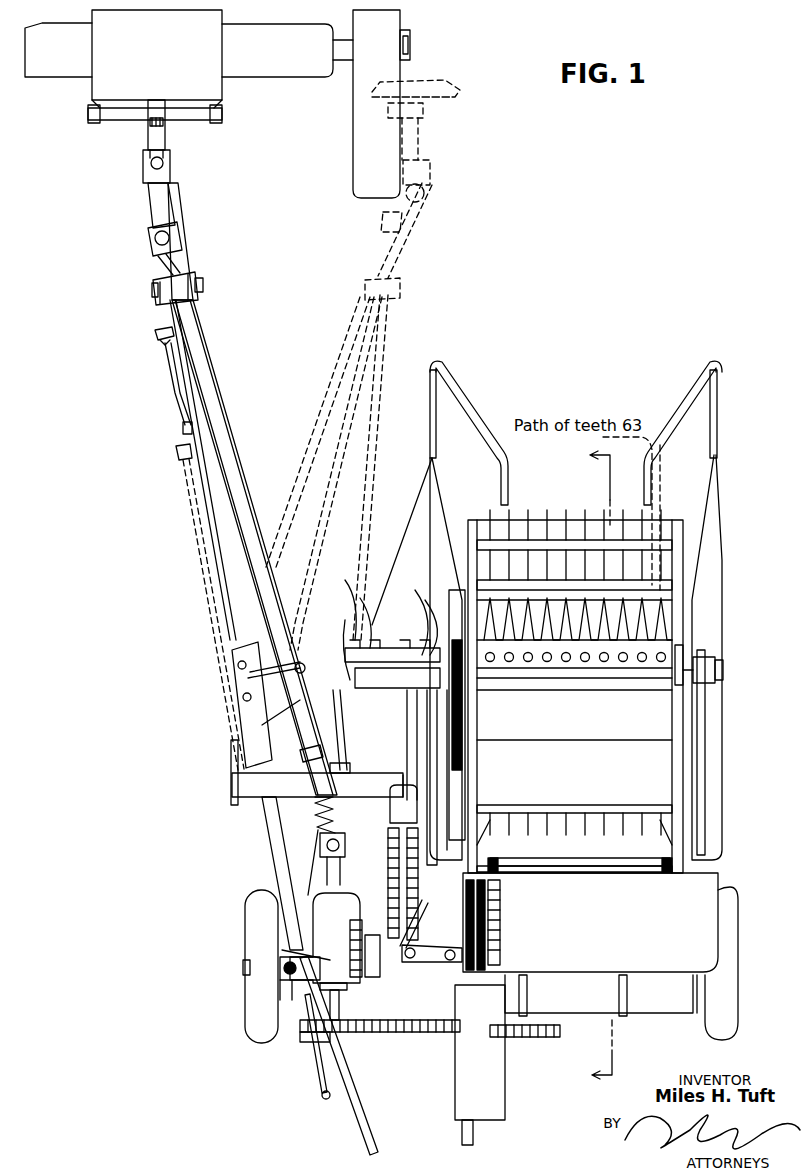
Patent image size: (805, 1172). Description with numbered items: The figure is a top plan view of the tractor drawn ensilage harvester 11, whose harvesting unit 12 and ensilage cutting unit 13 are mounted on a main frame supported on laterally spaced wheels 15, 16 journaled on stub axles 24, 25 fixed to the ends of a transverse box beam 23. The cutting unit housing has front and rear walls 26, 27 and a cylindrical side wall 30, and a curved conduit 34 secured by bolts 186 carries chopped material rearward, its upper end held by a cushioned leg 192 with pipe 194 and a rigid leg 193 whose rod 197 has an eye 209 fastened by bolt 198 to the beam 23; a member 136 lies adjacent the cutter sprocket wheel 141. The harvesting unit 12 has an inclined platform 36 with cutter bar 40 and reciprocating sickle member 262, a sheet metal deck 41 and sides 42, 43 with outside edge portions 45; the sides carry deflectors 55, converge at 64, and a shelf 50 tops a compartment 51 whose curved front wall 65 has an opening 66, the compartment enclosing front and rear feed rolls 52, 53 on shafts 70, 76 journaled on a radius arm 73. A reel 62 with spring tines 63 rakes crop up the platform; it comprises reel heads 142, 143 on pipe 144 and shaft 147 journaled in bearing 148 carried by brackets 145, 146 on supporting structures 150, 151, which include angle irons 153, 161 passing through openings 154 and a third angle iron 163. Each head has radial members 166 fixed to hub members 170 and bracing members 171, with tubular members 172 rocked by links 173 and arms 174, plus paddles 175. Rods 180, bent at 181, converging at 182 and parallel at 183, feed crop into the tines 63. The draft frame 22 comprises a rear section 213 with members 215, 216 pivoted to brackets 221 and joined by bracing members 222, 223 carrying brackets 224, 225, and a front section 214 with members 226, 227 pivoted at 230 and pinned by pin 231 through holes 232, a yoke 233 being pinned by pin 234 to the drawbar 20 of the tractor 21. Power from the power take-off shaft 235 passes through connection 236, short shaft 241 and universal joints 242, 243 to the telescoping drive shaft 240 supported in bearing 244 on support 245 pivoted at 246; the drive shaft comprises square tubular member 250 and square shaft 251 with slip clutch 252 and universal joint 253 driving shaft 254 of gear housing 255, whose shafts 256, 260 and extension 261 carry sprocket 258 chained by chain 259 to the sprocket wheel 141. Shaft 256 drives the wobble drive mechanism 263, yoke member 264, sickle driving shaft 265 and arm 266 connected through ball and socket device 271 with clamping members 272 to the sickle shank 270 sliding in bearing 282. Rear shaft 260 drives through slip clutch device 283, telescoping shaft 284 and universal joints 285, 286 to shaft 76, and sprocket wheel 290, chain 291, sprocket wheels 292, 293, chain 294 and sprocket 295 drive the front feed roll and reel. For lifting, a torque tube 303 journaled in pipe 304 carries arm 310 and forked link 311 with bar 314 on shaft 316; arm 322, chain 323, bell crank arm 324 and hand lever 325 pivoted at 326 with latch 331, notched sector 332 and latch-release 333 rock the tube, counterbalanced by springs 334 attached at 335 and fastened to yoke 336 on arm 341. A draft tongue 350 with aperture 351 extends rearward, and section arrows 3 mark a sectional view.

The ensilage harvester 11 is at (549, 381).
The harvesting unit 12 is at (727, 622).
The ensilage cutting unit 13 is at (607, 964).
The wheel 15 is at (258, 945).
The wheel 16 is at (725, 980).
The drawbar 20 is at (165, 157).
The tractor 21 is at (244, 85).
The draft frame 22 is at (238, 400).
The box beam 23 is at (299, 986).
The stub axle 24 is at (243, 968).
The stub axle 25 is at (740, 968).
The front wall 26 is at (655, 972).
The rear wall 27 is at (652, 1013).
The cylindrical side wall 30 is at (670, 1000).
The curved conduit 34 is at (447, 1069).
The platform 36 is at (712, 739).
The cutter bar 40 is at (568, 600).
The sheet metal deck 41 is at (571, 735).
The side 42 is at (473, 734).
The side 43 is at (681, 724).
The outside edge portion 45 is at (700, 762).
The shelf 50 is at (609, 917).
The compartment 51 is at (594, 861).
The front feed roll 52 is at (540, 866).
The rear feed roll 53 is at (500, 955).
The deflectors 55 is at (440, 512).
The reel 62 is at (633, 518).
The spring tines 63 is at (585, 520).
The converging portions 64 is at (478, 845).
The curved front wall 65 is at (545, 872).
The opening 66 is at (500, 866).
The transverse shaft 70 is at (488, 900).
The radius arm 73 is at (498, 945).
The transverse shaft 76 is at (490, 965).
The chain guard 136 is at (578, 1037).
The sprocket wheel 141 is at (555, 1037).
The reel head 142 is at (488, 724).
The reel head 143 is at (660, 717).
The transverse pipe 144 is at (575, 670).
The bracket 145 is at (723, 665).
The bracket 146 is at (447, 715).
The shaft 147 is at (728, 675).
The bearing 148 is at (718, 660).
The right hand supporting structure 150 is at (725, 709).
The left hand supporting structure 151 is at (420, 755).
The angle iron 153 is at (712, 782).
The openings 154 is at (722, 840).
The angle iron 161 is at (480, 780).
The third angle iron 163 is at (329, 640).
The radial members 166 is at (680, 606).
The hub members 170 is at (683, 650).
The bracing member 171 is at (683, 732).
The tubular members 172 is at (605, 796).
The links 173 is at (470, 563).
The arm 174 is at (470, 545).
The paddles 175 is at (650, 540).
The rods 180 is at (431, 410).
The bend 181 is at (440, 368).
The rearwardly extending portions 182 is at (466, 405).
The rear end portions 183 is at (503, 480).
The bolts 186 is at (480, 1052).
The supporting leg 192 is at (482, 1142).
The leg 193 is at (349, 1125).
The pipe 194 is at (462, 1122).
The rod 197 is at (348, 1096).
The bolt 198 is at (285, 963).
The eye 209 is at (285, 971).
The rear section 213 is at (255, 842).
The front section 214 is at (237, 504).
The member 215 is at (265, 818).
The member 216 is at (339, 859).
The brackets 221 is at (282, 950).
The bracing member 222 is at (262, 725).
The bracing member 223 is at (245, 676).
The bracket 224 is at (250, 712).
The bracket 225 is at (328, 627).
The member 226 is at (230, 606).
The member 227 is at (265, 567).
The pivot 230 is at (316, 598).
The pin 231 is at (243, 697).
The holes 232 is at (238, 664).
The yoke 233 is at (420, 215).
The pin 234 is at (428, 194).
The power take-off shaft 235 is at (150, 122).
The connection 236 is at (165, 138).
The telescoping drive shaft 240 is at (242, 455).
The short shaft 241 is at (390, 190).
The universal joint 242 is at (136, 166).
The universal joint 243 is at (372, 222).
The bearing 244 is at (392, 295).
The support 245 is at (365, 292).
The transverse pivot 246 is at (365, 285).
The square tubular member 250 is at (385, 355).
The square shaft 251 is at (310, 795).
The slip clutch 252 is at (308, 843).
The universal joint 253 is at (311, 865).
The shaft 254 is at (330, 898).
The gear housing 255 is at (288, 945).
The shaft 256 is at (390, 900).
The sprocket 258 is at (345, 1032).
The chain 259 is at (400, 1034).
The rear shaft 260 is at (353, 988).
The extension 261 is at (339, 1008).
The sickle member 262 is at (615, 655).
The wobble drive mechanism 263 is at (388, 885).
The yoke member 264 is at (412, 958).
The sickle driving shaft 265 is at (405, 735).
The arm 266 is at (406, 622).
The sickle shank 270 is at (360, 598).
The double ball and socket device 271 is at (415, 627).
The clamping members 272 is at (392, 646).
The bearing 282 is at (345, 598).
The slip clutch device 283 is at (377, 925).
The telescoping shaft 284 is at (432, 1008).
The universal joint 285 is at (424, 975).
The universal joint 286 is at (478, 1003).
The sprocket wheel 290 is at (475, 937).
The chain 291 is at (500, 935).
The sprocket wheel 292 is at (500, 905).
The sprocket wheel 293 is at (490, 885).
The chain 294 is at (480, 775).
The sprocket 295 is at (480, 682).
The torque tube 303 is at (232, 782).
The pipe 304 is at (250, 788).
The arm 310 is at (410, 715).
The forked link 311 is at (360, 690).
The bar 314 is at (345, 668).
The shaft 316 is at (348, 660).
The arm 322 is at (231, 762).
The chain 323 is at (205, 582).
The bell crank arm 324 is at (184, 472).
The hand lever 325 is at (174, 392).
The pivot 326 is at (177, 456).
The releasable latch 331 is at (183, 430).
The notched sector 332 is at (195, 447).
The latch-release 333 is at (156, 340).
The springs 334 is at (388, 855).
The attachment point 335 is at (398, 1005).
The U-shaped yoke 336 is at (340, 815).
The arm 341 is at (403, 785).
The draft tongue 350 is at (316, 1067).
The aperture 351 is at (322, 1095).
The section line 3 is at (601, 767).